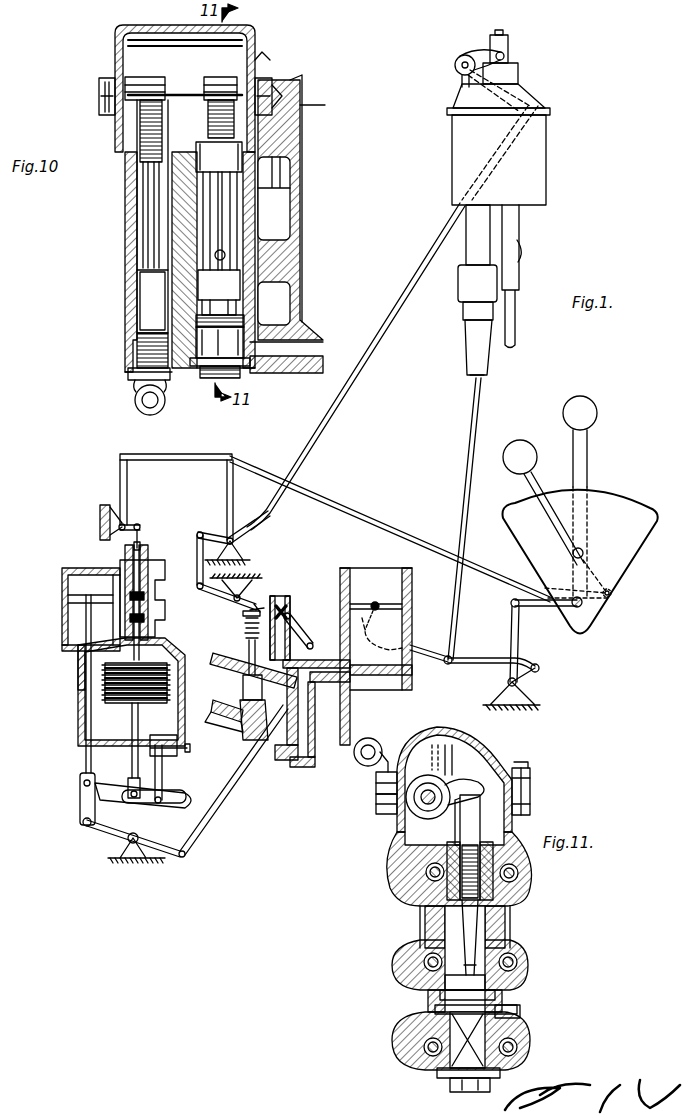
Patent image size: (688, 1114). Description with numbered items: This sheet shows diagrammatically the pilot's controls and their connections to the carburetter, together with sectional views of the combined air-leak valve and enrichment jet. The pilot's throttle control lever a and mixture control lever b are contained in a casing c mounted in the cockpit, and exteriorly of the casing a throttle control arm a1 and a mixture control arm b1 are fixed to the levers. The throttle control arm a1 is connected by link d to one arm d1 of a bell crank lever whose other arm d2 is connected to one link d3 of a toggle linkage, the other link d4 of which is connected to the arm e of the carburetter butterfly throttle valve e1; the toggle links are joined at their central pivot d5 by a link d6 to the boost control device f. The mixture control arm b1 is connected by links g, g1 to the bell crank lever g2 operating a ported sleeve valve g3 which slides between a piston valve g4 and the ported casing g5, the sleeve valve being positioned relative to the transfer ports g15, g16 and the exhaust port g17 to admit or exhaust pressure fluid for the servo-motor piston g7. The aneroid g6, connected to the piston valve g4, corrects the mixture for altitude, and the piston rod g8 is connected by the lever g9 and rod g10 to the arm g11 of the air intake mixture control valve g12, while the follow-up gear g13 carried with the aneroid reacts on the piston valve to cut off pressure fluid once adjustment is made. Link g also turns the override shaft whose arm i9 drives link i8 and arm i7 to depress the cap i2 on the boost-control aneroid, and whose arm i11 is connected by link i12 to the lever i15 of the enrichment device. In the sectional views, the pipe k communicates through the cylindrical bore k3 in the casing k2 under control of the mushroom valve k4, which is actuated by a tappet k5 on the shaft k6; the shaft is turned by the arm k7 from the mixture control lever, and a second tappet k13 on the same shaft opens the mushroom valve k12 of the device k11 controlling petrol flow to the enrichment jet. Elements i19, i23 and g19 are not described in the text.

In FIG. 10, the pipe k is at (145, 400).
In FIG. 10, the casing k2 is at (133, 230).
In FIG. 11, the casing k2 is at (438, 898).
In FIG. 10, the cylindrical bore k3 is at (150, 312).
In FIG. 10, the mushroom valve k4 is at (142, 262).
In FIG. 10, the tappet k5 is at (150, 82).
In FIG. 10, the shaft k6 is at (196, 95).
In FIG. 11, the shaft k6 is at (410, 812).
In FIG. 11, the arm k7 is at (380, 755).
In FIG. 10, the device controlling flow of petrol to an enrichment jet k11 is at (262, 270).
In FIG. 11, the device controlling flow of petrol to an enrichment jet k11 is at (478, 993).
In FIG. 11, the mushroom valve k12 is at (455, 992).
In FIG. 10, the tappet k13 is at (222, 82).
In FIG. 11, the tappet k13 is at (470, 780).
In FIG. 1, the cap i2 is at (479, 52).
In FIG. 1, the arm i7 is at (525, 95).
In FIG. 1, the link i8 is at (388, 352).
In FIG. 1, the arm i9 is at (258, 530).
In FIG. 1, the arm i11 is at (210, 533).
In FIG. 1, the link i12 is at (205, 562).
In FIG. 1, the lever i15 is at (218, 590).
In FIG. 1, the valve stem i19 is at (243, 690).
In FIG. 1, the link i23 is at (228, 483).
In FIG. 1, the boost control device f is at (517, 262).
In FIG. 1, the pilot's throttle control lever a is at (520, 455).
In FIG. 1, the throttle control arm a1 is at (612, 590).
In FIG. 1, the pilot's mixture control lever b is at (582, 410).
In FIG. 1, the mixture control arm b1 is at (553, 590).
In FIG. 1, the casing c is at (628, 568).
In FIG. 1, the link d is at (538, 610).
In FIG. 1, the arm of bell crank lever d1 is at (512, 615).
In FIG. 1, the arm of bell crank lever d2 is at (538, 678).
In FIG. 1, the toggle link d3 is at (483, 662).
In FIG. 1, the toggle link d4 is at (435, 648).
In FIG. 1, the central pivot d5 is at (448, 665).
In FIG. 1, the link d6 is at (468, 430).
In FIG. 1, the link g is at (398, 522).
In FIG. 1, the link g1 is at (192, 455).
In FIG. 1, the bell crank lever g2 is at (122, 470).
In FIG. 1, the ported sleeve valve g3 is at (145, 560).
In FIG. 1, the piston valve g4 is at (148, 622).
In FIG. 1, the ported casing g5 is at (148, 598).
In FIG. 1, the aneroid g6 is at (160, 660).
In FIG. 1, the servo-motor piston g7 is at (78, 585).
In FIG. 1, the piston rod g8 is at (85, 745).
In FIG. 1, the lever g9 is at (110, 838).
In FIG. 1, the rod g10 is at (205, 828).
In FIG. 1, the arm g11 is at (300, 630).
In FIG. 1, the air intake mixture control valve g12 is at (278, 615).
In FIG. 1, the follow-up gear g13 is at (115, 790).
In FIG. 1, the transfer port g15 is at (95, 648).
In FIG. 1, the transfer port g16 is at (125, 560).
In FIG. 1, the exhaust port g17 is at (148, 580).
In FIG. 1, the passage g19 is at (82, 603).
In FIG. 1, the arm of carburetter butterfly throttle valve e is at (362, 618).
In FIG. 1, the carburetter butterfly throttle valve e1 is at (362, 602).